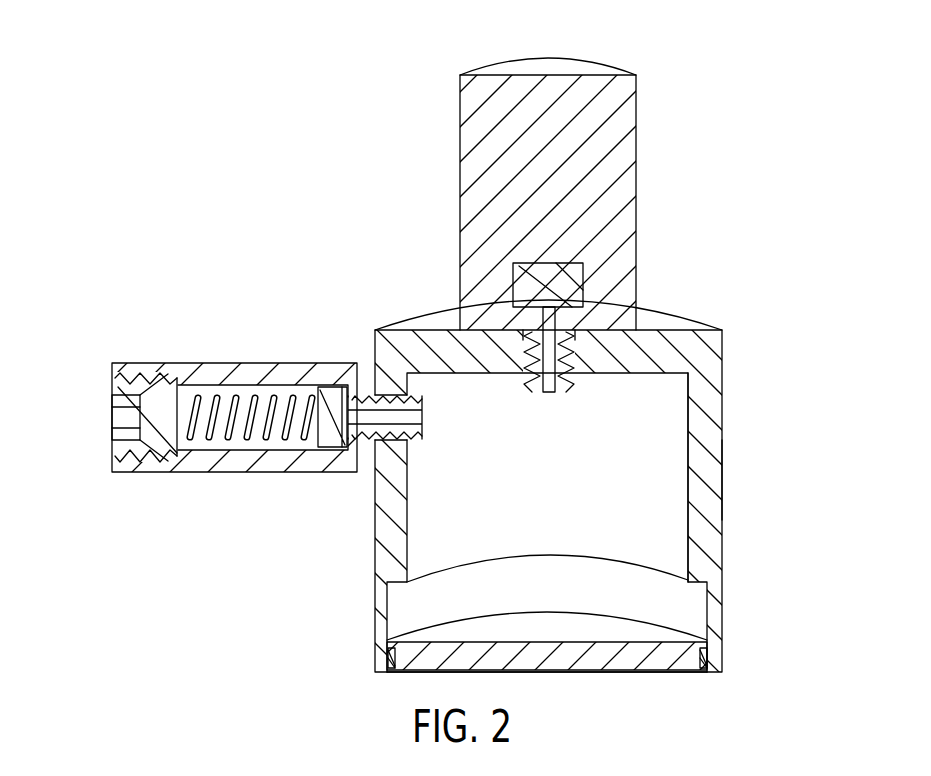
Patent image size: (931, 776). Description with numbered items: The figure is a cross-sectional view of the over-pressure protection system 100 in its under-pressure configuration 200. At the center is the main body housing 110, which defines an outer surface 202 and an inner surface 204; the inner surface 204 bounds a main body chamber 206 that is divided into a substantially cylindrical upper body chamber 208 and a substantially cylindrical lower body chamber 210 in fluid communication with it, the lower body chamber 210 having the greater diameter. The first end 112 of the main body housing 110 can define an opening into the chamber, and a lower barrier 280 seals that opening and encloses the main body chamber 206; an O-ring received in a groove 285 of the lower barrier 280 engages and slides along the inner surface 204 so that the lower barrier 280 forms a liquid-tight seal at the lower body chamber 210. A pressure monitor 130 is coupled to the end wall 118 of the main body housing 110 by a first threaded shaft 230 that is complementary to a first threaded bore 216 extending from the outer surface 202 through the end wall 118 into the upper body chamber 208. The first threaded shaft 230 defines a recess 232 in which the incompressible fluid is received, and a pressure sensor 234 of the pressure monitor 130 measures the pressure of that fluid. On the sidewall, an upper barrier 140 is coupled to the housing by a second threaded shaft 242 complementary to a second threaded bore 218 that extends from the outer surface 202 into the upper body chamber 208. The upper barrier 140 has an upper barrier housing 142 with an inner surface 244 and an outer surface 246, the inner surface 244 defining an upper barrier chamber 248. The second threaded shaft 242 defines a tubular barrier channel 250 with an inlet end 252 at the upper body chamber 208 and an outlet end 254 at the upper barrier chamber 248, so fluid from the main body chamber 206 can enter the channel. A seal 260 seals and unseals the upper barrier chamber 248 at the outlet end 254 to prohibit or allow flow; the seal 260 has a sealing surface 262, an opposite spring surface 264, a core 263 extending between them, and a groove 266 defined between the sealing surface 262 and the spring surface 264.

The over-pressure protection system 100 is at (237, 120).
The main body housing 110 is at (705, 468).
The first end 112 is at (712, 672).
The end wall 118 is at (688, 320).
The pressure monitor 130 is at (690, 98).
The upper barrier 140 is at (137, 532).
The upper barrier housing 142 is at (236, 378).
The under-pressure configuration 200 is at (142, 210).
The outer surface 202 is at (727, 478).
The inner surface 204 is at (668, 430).
The main body chamber 206 is at (661, 553).
The upper body chamber 208 is at (663, 512).
The lower body chamber 210 is at (680, 607).
The first threaded bore 216 is at (575, 345).
The second threaded bore 218 is at (380, 443).
The first threaded shaft 230 is at (523, 365).
The recess 232 is at (548, 400).
The pressure sensor 234 is at (522, 280).
The second threaded shaft 242 is at (418, 440).
The inner surface 244 is at (265, 405).
The outer surface 246 is at (170, 360).
The upper barrier chamber 248 is at (207, 447).
The tubular barrier channel 250 is at (385, 398).
The inlet end 252 is at (420, 418).
The outlet end 254 is at (330, 388).
The seal 260 is at (337, 448).
The sealing surface 262 is at (362, 445).
The core 263 is at (316, 403).
The spring surface 264 is at (303, 442).
The groove 266 is at (342, 450).
The lower barrier 280 is at (405, 680).
The groove 285 is at (697, 655).